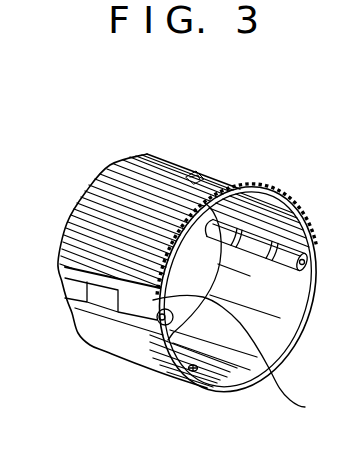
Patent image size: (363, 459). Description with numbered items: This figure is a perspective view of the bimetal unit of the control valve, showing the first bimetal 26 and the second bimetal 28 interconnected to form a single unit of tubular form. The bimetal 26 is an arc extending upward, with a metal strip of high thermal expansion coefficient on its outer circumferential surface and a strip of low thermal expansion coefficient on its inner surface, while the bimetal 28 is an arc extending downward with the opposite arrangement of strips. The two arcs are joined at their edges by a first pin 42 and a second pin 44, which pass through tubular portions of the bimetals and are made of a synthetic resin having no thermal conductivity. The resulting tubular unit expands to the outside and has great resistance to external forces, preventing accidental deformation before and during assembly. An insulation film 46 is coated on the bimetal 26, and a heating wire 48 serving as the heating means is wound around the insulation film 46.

The bimetal 26 is at (72, 282).
The bimetal 28 is at (295, 333).
The first pin 42 is at (173, 318).
The second pin 44 is at (307, 263).
The insulation film 46 is at (230, 187).
The heating wire 48 is at (147, 154).